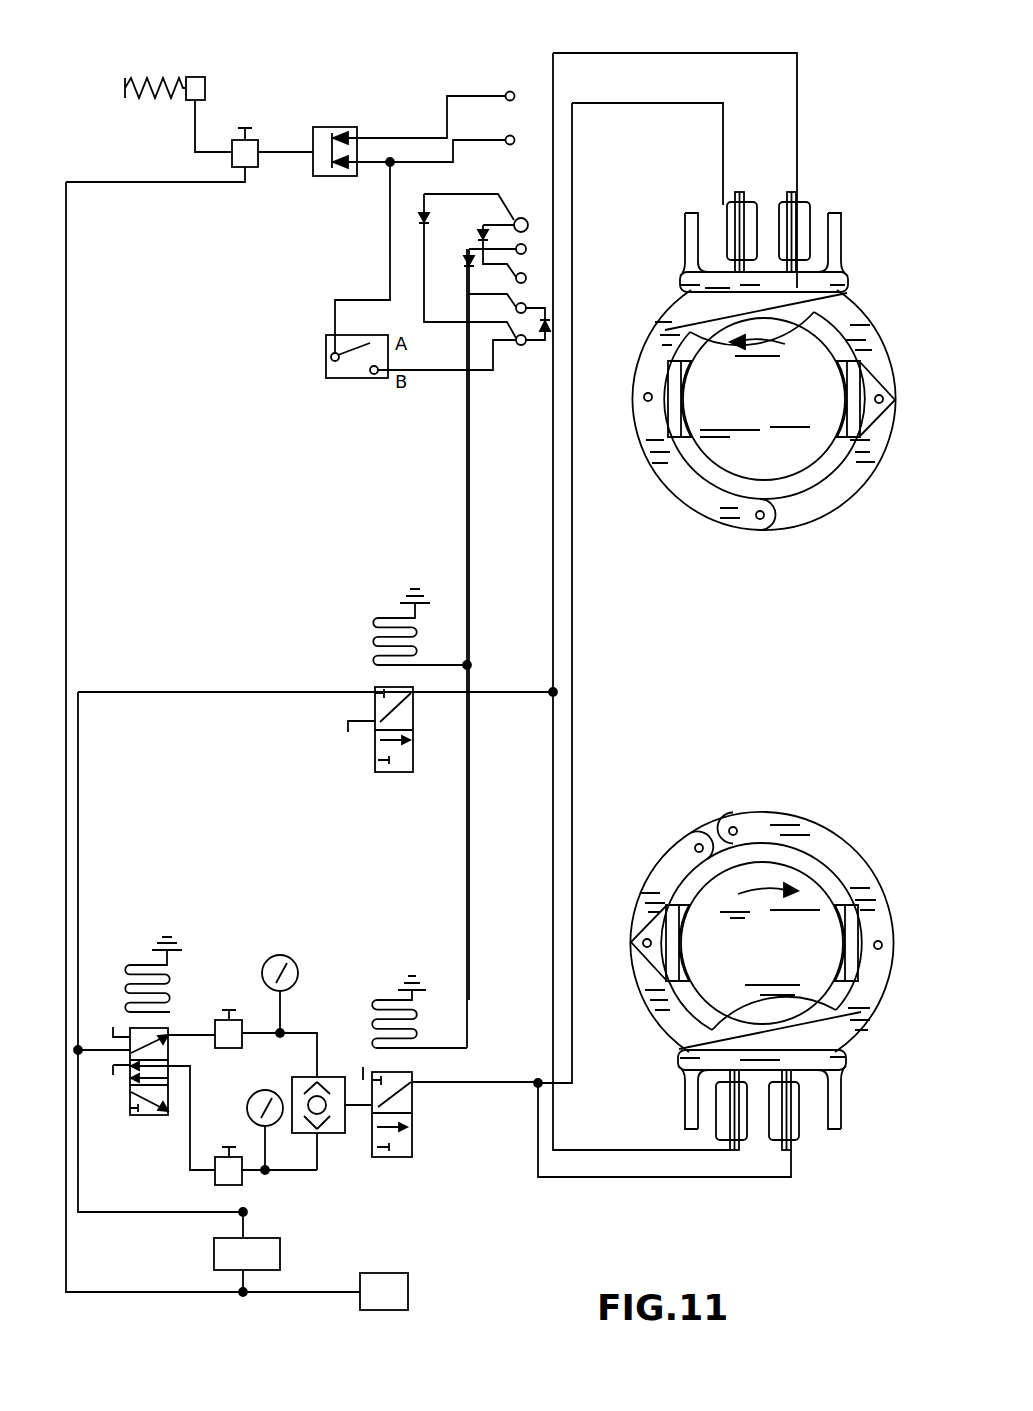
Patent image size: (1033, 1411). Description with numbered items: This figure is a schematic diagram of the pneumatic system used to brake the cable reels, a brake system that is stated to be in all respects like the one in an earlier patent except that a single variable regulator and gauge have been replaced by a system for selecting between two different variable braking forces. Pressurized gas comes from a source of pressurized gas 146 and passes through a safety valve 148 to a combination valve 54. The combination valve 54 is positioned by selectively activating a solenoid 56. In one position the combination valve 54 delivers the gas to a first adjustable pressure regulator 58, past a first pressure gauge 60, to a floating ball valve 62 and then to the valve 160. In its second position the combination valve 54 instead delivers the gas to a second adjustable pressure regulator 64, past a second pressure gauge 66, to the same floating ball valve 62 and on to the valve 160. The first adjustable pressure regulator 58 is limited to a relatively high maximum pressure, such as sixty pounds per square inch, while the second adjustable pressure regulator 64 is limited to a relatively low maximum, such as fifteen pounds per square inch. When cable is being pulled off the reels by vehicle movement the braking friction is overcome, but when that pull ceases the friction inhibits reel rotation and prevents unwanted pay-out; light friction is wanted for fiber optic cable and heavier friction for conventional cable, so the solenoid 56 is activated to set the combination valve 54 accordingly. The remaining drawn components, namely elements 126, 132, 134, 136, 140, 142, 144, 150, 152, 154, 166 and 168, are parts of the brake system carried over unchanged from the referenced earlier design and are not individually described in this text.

The combination valve 54 is at (148, 1120).
The solenoid 56 is at (137, 948).
The first adjustable pressure regulator 58 is at (230, 1007).
The first pressure gauge 60 is at (283, 955).
The floating ball valve 62 is at (327, 1135).
The second adjustable pressure regulator 64 is at (240, 1176).
The second pressure gauge 66 is at (264, 1090).
The brake drum 126 is at (803, 385).
The first brake arm 132 is at (683, 490).
The second brake arm 134 is at (841, 490).
The brake shoes 136 is at (683, 393).
The solenoid coil 140 is at (728, 222).
The solenoid coil 142 is at (805, 230).
The brake assembly 144 is at (722, 542).
The source of pressurized gas 146 is at (405, 1288).
The safety valve 148 is at (280, 1250).
The control valve 150 is at (258, 165).
The spring-biased actuator 152 is at (197, 75).
The solenoid valve 154 is at (392, 772).
The valve 160 is at (412, 1157).
The relay 166 is at (330, 127).
The switch 168 is at (350, 372).